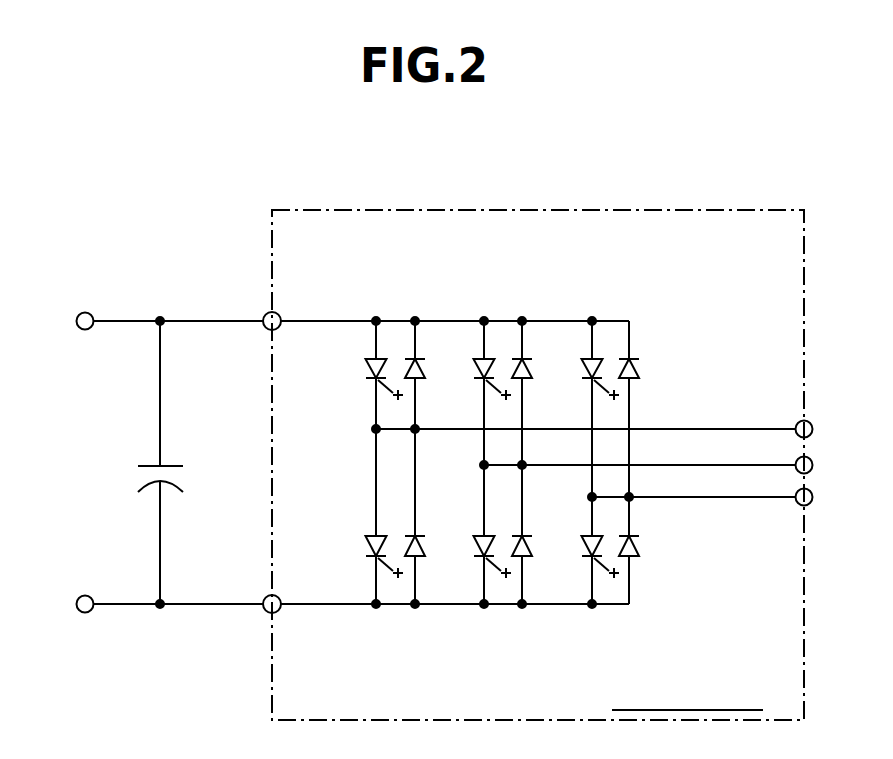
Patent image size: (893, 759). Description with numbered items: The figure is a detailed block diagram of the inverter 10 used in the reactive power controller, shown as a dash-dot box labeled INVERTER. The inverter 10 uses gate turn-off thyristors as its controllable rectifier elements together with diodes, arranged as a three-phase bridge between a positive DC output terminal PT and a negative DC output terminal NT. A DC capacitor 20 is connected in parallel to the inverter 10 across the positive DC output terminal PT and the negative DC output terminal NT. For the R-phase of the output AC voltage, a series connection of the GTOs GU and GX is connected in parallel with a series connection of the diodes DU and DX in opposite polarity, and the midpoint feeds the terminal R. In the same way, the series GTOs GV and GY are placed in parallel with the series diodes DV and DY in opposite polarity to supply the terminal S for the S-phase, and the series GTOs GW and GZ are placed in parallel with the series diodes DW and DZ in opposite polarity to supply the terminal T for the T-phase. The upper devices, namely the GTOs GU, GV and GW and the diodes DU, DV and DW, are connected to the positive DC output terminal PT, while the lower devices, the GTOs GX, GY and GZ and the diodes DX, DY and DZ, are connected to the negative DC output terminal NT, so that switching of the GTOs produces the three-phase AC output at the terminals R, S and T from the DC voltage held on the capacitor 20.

The inverter 10 is at (543, 209).
The DC capacitor 20 is at (167, 457).
The positive DC output terminal PT is at (328, 323).
The negative DC output terminal NT is at (327, 606).
The terminal R is at (605, 431).
The terminal S is at (659, 467).
The terminal T is at (713, 499).
The GTO GU is at (366, 362).
The diode DU is at (426, 370).
The GTO GV is at (474, 372).
The diode DV is at (533, 370).
The GTO GW is at (582, 362).
The diode DW is at (640, 368).
The GTO GX is at (366, 541).
The diode DX is at (426, 548).
The GTO GY is at (474, 545).
The diode DY is at (532, 548).
The GTO GZ is at (583, 540).
The diode DZ is at (640, 548).